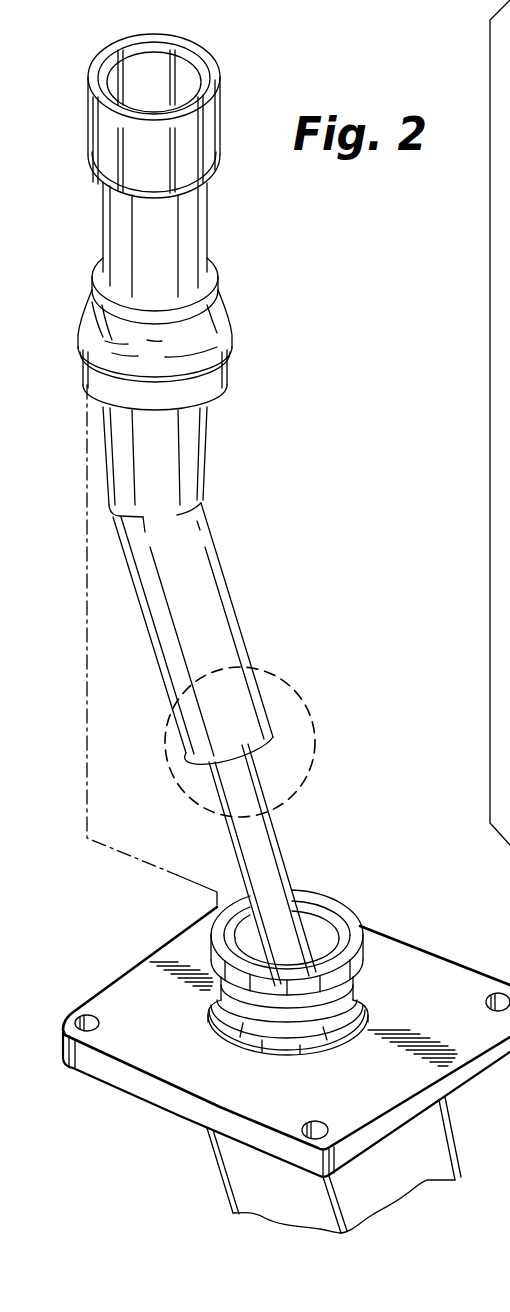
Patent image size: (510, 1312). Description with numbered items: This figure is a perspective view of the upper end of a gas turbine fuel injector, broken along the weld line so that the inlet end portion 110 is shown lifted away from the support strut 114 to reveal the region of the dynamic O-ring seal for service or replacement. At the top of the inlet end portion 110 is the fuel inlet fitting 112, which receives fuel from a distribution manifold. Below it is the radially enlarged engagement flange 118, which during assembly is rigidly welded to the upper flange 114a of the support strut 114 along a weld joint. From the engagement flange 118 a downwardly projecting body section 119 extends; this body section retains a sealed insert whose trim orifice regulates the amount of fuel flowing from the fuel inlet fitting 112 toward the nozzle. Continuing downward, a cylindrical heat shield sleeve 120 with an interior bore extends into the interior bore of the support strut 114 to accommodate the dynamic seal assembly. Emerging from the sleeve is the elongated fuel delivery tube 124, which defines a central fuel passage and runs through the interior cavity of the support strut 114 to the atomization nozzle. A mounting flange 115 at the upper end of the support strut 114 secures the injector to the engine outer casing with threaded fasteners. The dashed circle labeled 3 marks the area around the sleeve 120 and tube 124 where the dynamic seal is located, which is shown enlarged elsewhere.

The inlet end portion 110 is at (331, 343).
The fuel inlet fitting 112 is at (214, 117).
The engagement flange 118 is at (232, 348).
The body section 119 is at (204, 449).
The heat shield sleeve 120 is at (223, 567).
The fuel delivery tube 124 is at (273, 856).
The upper flange 114a is at (354, 929).
The mounting flange 115 is at (436, 974).
The support strut 114 is at (237, 1177).
The detail circle for FIG. 3 is at (277, 680).